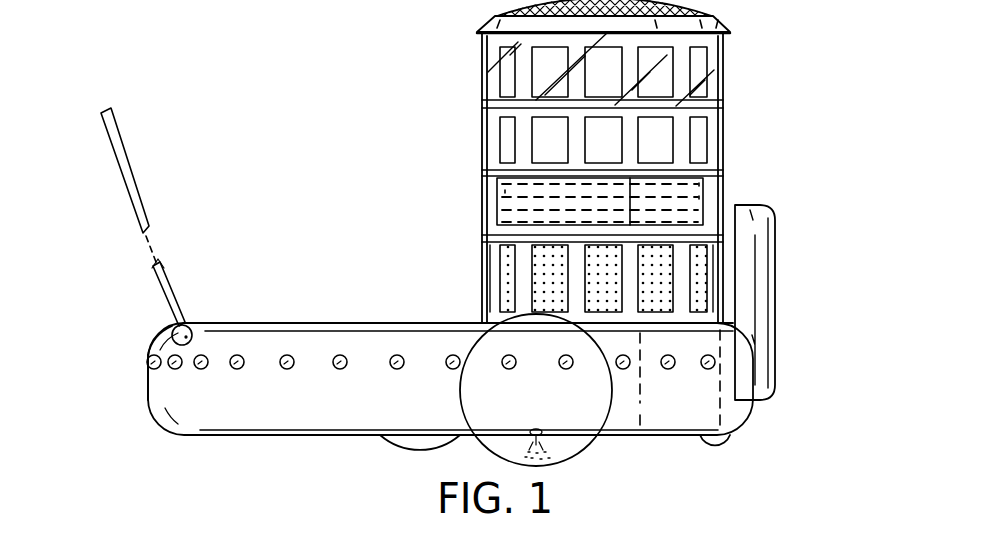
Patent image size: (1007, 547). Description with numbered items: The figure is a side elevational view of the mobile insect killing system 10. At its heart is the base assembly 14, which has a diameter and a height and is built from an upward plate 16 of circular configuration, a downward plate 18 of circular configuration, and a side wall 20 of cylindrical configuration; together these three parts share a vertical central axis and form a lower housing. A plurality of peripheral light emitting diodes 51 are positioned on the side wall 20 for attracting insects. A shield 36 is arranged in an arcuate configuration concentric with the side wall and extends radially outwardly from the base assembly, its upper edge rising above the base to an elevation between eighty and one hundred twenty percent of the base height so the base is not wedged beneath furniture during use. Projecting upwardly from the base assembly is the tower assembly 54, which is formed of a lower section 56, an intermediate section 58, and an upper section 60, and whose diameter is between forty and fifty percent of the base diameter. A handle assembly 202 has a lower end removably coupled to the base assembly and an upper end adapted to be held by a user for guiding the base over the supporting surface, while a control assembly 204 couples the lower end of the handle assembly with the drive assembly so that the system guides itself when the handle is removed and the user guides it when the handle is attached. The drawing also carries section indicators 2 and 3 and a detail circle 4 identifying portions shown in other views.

The section line 2- 2 is at (165, 29).
The section line 3- 3 is at (129, 474).
The detail region 4 is at (597, 437).
The mobile insect killing system 10 is at (326, 141).
The base assembly 14 is at (163, 320).
The upward plate 16 is at (336, 322).
The downward plate 18 is at (326, 436).
The side wall 20 is at (178, 382).
The shield 36 is at (776, 272).
The peripheral light emitting diodes 51 is at (237, 369).
The tower assembly 54 is at (486, 142).
The lower section 56 is at (520, 276).
The intermediate section 58 is at (722, 172).
The upper section 60 is at (492, 43).
The handle assembly 202 is at (110, 152).
The control assembly 204 is at (194, 328).